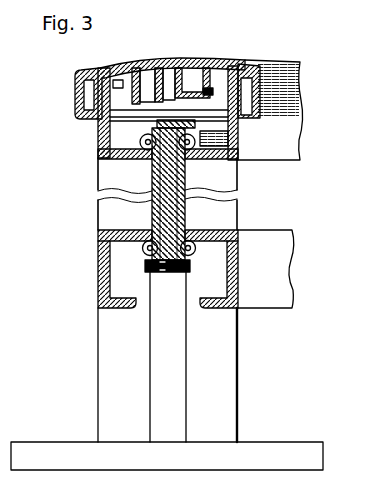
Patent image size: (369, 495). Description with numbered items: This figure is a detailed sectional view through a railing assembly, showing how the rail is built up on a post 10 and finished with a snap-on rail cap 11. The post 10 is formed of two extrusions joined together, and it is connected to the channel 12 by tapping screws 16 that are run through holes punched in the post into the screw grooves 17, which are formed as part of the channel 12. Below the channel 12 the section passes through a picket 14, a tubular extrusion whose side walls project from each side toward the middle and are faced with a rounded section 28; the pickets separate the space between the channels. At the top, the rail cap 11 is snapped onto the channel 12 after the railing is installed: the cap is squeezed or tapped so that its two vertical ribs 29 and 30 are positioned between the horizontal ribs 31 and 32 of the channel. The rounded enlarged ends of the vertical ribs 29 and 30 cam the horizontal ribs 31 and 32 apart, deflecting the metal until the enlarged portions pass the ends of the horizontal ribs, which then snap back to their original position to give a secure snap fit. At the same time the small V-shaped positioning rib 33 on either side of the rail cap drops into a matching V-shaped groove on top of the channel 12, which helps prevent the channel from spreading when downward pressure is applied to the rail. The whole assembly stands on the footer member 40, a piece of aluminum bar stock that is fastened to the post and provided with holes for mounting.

The post 10 is at (237, 367).
The rail cap 11 is at (220, 64).
The channel 12 is at (239, 149).
The picket 14 is at (190, 211).
The tapping screw 16 is at (141, 139).
The screw groove 17 is at (232, 135).
The rounded section 28 is at (189, 178).
The vertical rib 29 is at (123, 88).
The vertical rib 30 is at (190, 82).
The horizontal rib 31 is at (130, 85).
The horizontal rib 32 is at (232, 75).
The V-shaped positioning rib 33 is at (92, 74).
The footer member 40 is at (279, 442).